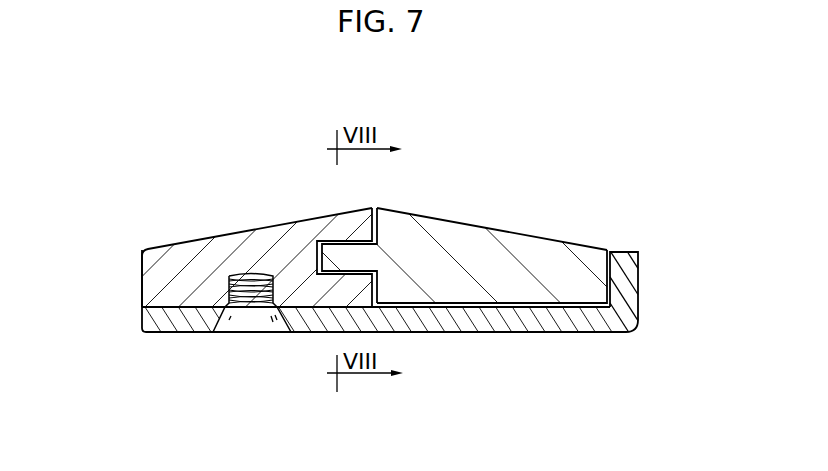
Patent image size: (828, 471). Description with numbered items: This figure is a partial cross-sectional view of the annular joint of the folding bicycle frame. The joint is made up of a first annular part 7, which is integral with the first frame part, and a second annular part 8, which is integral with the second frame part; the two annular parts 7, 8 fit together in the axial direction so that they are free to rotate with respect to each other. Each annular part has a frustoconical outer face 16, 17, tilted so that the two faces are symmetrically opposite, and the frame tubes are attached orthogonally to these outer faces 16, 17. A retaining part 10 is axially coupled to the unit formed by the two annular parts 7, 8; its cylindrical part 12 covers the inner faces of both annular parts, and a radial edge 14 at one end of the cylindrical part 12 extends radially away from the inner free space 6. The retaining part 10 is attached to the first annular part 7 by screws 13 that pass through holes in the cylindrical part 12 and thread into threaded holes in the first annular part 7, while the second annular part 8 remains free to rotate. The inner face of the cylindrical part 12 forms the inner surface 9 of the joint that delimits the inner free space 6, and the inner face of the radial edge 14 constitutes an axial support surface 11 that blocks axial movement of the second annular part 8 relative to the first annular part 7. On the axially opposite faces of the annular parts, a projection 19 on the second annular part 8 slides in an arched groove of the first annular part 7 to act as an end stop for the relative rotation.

The inner free space 6 is at (218, 365).
The first annular part 7 is at (192, 258).
The second annular part 8 is at (520, 243).
The inner surface 9 is at (446, 340).
The retaining part 10 is at (525, 345).
The axial support surface 11 is at (609, 256).
The cylindrical part 12 is at (588, 327).
The screws 13 is at (248, 322).
The radial edge 14 is at (628, 281).
The frustoconical outer face 16 is at (232, 220).
The frustoconical outer face 17 is at (463, 218).
The projection 19 is at (333, 255).